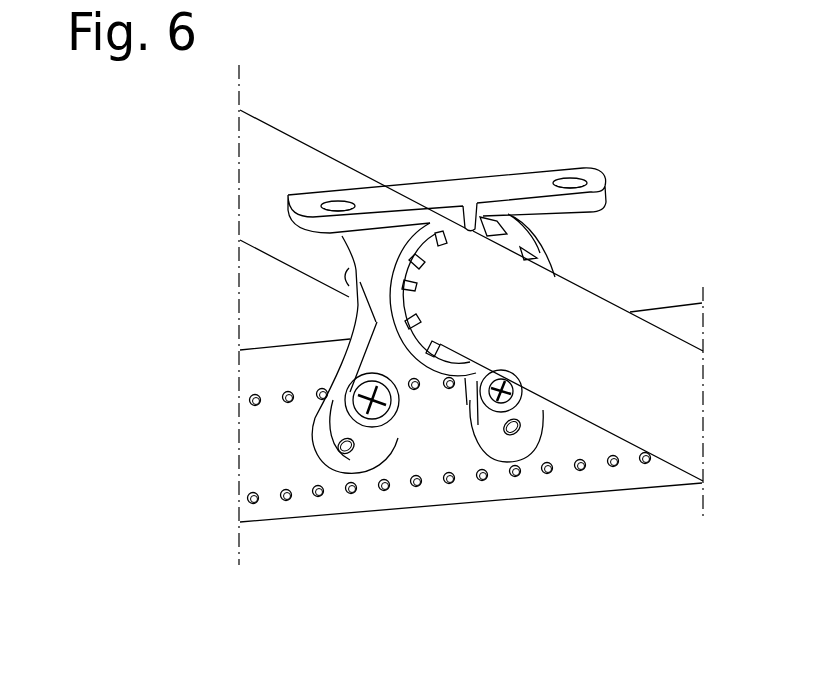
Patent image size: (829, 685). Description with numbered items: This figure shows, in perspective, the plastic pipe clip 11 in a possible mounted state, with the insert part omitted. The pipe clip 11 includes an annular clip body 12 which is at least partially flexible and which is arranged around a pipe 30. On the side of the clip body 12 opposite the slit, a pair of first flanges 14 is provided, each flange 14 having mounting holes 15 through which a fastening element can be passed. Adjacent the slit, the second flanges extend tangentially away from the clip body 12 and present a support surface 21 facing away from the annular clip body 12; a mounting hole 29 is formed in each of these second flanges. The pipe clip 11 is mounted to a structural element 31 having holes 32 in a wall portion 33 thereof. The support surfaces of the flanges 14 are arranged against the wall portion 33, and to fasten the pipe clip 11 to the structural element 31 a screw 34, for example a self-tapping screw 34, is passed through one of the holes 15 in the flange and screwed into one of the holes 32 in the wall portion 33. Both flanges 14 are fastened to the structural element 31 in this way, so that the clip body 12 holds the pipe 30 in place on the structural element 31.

The pipe clip 11 is at (576, 261).
The annular clip body 12 is at (377, 283).
The first flanges 14 is at (325, 430).
The mounting holes 15 is at (344, 448).
The support surface 21 is at (452, 159).
The mounting hole 29 is at (337, 200).
The pipe 30 is at (576, 320).
The structural element 31 is at (593, 447).
The holes 32 is at (288, 397).
The wall portion 33 is at (413, 440).
The screw 34 is at (372, 405).